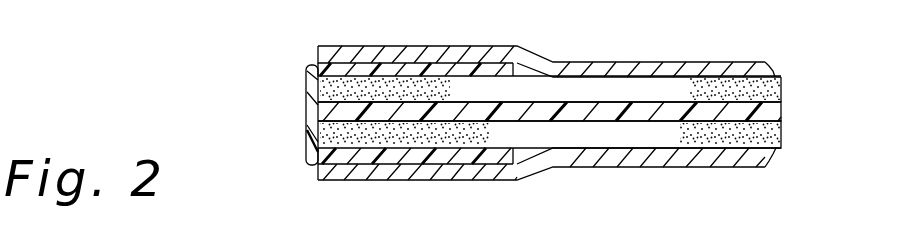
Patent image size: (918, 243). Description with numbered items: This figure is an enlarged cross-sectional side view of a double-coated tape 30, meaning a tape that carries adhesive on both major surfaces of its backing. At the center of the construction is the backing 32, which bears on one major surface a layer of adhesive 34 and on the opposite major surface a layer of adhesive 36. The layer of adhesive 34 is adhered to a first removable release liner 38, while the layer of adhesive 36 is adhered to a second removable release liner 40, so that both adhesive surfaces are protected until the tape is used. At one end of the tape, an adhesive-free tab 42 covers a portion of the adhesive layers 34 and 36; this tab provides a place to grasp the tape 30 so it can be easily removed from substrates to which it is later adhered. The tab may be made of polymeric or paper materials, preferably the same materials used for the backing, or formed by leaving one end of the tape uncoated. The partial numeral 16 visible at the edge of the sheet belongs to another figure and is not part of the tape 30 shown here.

The partial numeral from adjacent figure 16 is at (121, 7).
The tape 30 is at (730, 52).
The backing 32 is at (773, 111).
The layer of adhesive 34 is at (776, 84).
The layer of adhesive 36 is at (713, 139).
The first removable release liner 38 is at (592, 62).
The second removable release liner 40 is at (597, 156).
The adhesive-free tab 42 is at (312, 83).